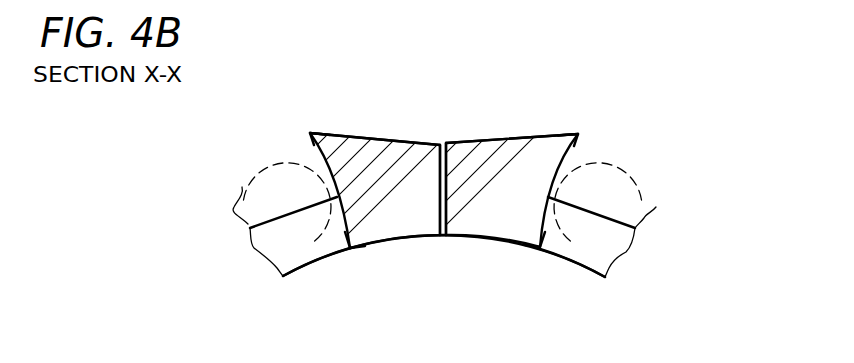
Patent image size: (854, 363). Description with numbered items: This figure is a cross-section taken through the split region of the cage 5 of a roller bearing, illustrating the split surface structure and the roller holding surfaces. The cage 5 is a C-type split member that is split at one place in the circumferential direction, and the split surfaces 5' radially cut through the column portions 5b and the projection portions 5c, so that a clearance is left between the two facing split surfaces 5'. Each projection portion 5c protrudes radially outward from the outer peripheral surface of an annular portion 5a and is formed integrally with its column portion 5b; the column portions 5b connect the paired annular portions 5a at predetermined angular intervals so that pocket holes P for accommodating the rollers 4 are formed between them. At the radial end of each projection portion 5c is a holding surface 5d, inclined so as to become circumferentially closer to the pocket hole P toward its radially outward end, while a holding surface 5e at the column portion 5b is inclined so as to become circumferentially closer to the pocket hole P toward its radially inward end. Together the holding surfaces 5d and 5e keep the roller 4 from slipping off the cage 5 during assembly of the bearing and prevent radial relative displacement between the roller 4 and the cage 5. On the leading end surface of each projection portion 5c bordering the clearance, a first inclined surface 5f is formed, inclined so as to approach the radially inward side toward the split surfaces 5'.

The roller 4 is at (247, 177).
The cage 5 is at (495, 181).
The split surface 5' is at (441, 280).
The annular portion 5a is at (242, 187).
The column portion 5b is at (400, 238).
The projection portion 5c is at (382, 157).
The holding surface 5d is at (309, 148).
The holding surface 5e is at (343, 249).
The first inclined surface 5f is at (467, 141).
The pocket hole P is at (306, 230).